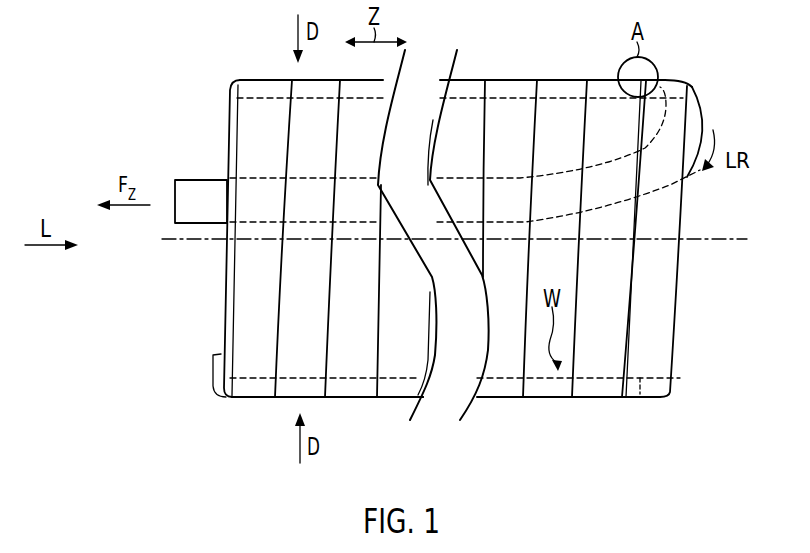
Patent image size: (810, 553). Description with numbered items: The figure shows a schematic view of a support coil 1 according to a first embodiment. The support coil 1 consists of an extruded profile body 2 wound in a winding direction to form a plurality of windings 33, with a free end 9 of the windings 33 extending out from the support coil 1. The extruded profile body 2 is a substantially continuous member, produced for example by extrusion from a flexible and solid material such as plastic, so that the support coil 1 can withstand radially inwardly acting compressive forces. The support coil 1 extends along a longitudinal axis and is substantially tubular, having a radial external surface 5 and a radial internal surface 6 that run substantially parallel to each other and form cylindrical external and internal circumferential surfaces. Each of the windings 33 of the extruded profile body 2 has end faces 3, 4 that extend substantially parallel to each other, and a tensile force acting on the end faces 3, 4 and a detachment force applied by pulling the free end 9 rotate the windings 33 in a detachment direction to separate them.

The support coil 1 is at (157, 53).
The extruded profile body 2 is at (667, 306).
The end face 3 is at (480, 160).
The end face 4 is at (485, 128).
The external surface 5 is at (517, 80).
The internal surface 6 is at (644, 400).
The free end 9 is at (203, 183).
The windings 33 is at (352, 367).